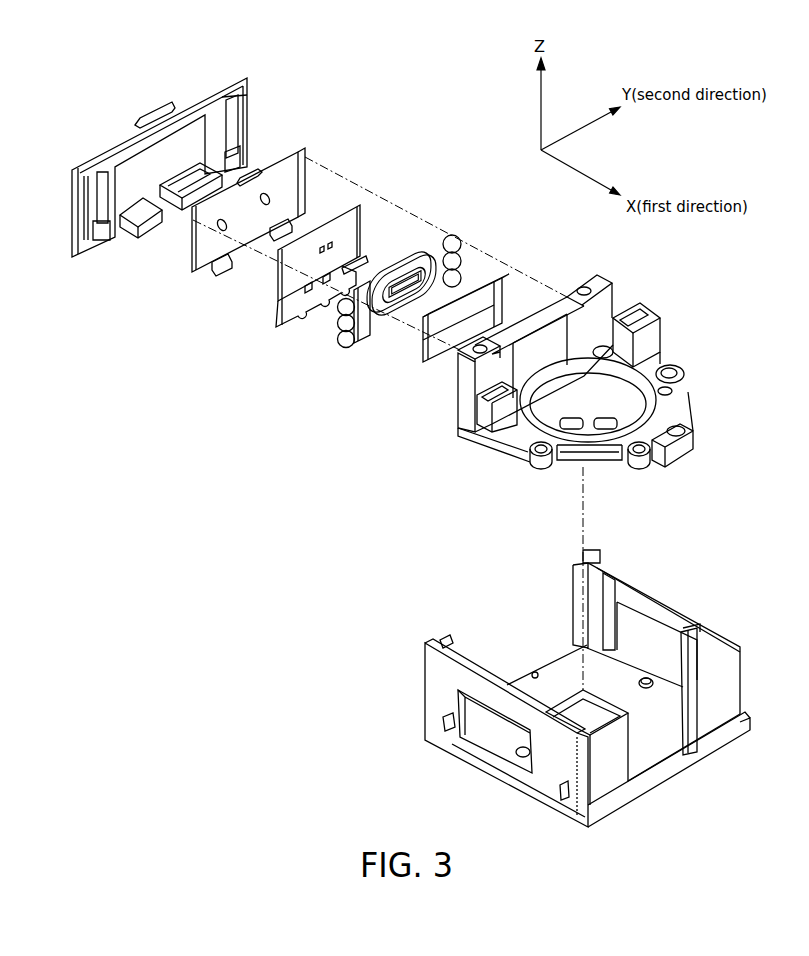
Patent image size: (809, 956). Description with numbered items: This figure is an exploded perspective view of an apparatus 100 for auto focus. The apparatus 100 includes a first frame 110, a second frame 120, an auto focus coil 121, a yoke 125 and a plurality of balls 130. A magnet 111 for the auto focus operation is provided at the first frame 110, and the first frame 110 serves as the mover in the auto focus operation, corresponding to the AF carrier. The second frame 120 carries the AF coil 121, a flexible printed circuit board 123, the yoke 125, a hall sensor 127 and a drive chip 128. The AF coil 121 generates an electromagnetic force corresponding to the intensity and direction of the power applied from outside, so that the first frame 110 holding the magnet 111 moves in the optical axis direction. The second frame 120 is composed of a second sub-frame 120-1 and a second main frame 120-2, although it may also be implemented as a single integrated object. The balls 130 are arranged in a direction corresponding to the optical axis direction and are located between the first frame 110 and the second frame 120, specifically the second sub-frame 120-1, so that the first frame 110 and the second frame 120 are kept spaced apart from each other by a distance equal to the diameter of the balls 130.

The apparatus for auto focus 100 is at (698, 286).
The first frame 110 is at (691, 362).
The magnet 111 is at (495, 296).
The second frame 120 is at (246, 703).
The second sub-frame 120-1 is at (142, 250).
The second main frame 120-2 is at (403, 729).
The AF coil 121 is at (410, 262).
The flexible printed circuit board 123 is at (357, 220).
The yoke 125 is at (300, 152).
The hall sensor 127 is at (405, 297).
The drive chip 128 is at (368, 320).
The balls 130 is at (453, 247).